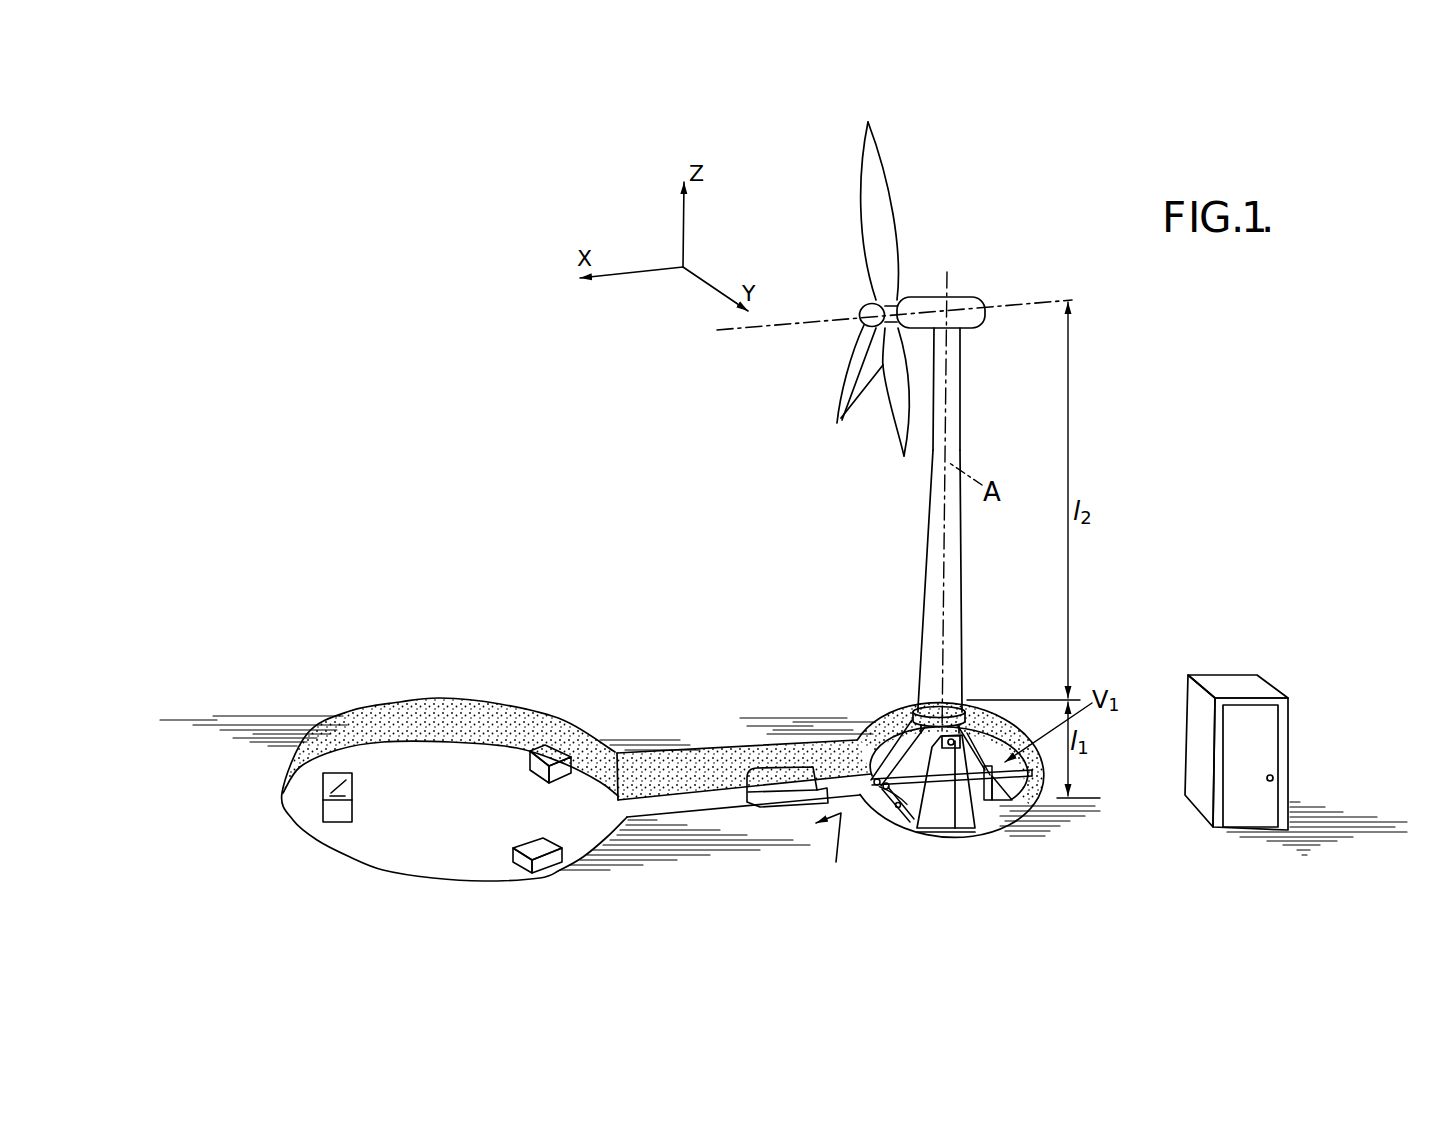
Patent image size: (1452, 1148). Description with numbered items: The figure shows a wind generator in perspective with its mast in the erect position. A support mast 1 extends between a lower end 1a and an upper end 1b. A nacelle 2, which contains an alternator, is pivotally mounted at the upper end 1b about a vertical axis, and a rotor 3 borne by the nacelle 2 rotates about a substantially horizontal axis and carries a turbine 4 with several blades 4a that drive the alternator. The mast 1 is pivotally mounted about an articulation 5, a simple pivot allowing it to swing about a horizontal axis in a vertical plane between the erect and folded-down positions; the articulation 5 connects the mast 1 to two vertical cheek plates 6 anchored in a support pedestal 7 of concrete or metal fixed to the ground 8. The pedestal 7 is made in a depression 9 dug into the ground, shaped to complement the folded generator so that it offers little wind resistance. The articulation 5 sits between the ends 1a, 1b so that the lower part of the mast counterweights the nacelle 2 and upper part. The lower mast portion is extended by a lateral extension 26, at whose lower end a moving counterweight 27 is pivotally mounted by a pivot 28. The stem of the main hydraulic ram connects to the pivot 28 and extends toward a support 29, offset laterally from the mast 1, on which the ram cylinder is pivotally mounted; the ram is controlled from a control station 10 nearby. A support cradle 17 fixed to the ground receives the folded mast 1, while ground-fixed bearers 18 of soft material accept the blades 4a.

The support mast 1 is at (920, 537).
The lower end 1a is at (873, 755).
The upper end 1b is at (954, 338).
The nacelle 2 is at (970, 306).
The rotor 3 is at (868, 320).
The turbine 4 is at (865, 300).
The blades 4a is at (880, 208).
The articulation 5 is at (963, 750).
The vertical cheek plates 6 is at (957, 805).
The support pedestal 7 is at (905, 818).
The ground 8 is at (830, 853).
The depression 9 is at (987, 733).
The control station 10 is at (1274, 687).
The support cradle 17 is at (776, 778).
The bearers 18 is at (538, 838).
The lateral extension 26 is at (910, 755).
The moving counterweight 27 is at (897, 810).
The pivot 28 is at (880, 792).
The support 29 is at (993, 796).